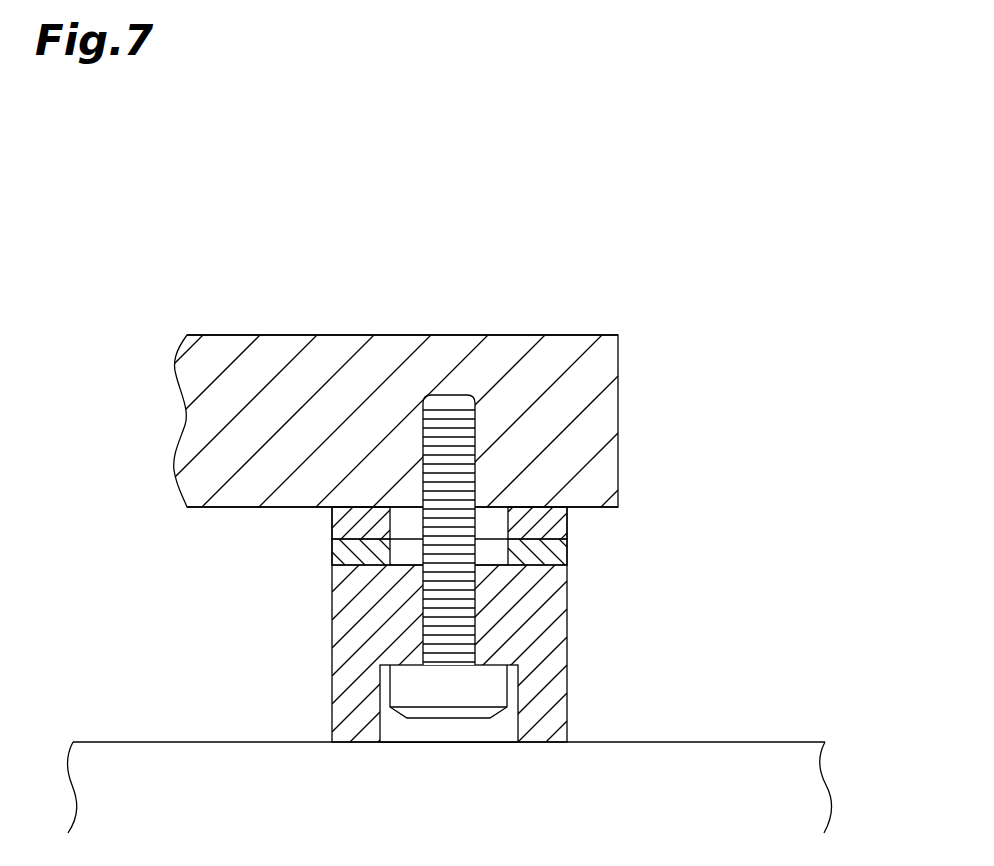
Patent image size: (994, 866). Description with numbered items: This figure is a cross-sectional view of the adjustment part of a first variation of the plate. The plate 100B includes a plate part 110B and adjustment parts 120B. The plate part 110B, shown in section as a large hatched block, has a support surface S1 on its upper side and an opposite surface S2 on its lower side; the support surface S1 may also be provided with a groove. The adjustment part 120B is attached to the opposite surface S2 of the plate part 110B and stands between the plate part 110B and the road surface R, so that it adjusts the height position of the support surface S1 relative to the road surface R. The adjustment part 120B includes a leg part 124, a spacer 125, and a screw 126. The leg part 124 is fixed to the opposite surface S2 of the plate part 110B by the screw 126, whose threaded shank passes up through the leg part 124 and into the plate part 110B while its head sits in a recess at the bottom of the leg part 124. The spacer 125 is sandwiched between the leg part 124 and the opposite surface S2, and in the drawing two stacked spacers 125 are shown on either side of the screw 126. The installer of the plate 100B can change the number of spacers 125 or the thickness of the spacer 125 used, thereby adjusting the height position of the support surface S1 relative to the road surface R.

The plate 100B is at (457, 504).
The plate part 110B is at (304, 336).
The support surface S1 is at (237, 336).
The opposite surface S2 is at (235, 508).
The adjustment part 120B is at (569, 613).
The leg part 124 is at (557, 690).
The spacer 125 is at (567, 520).
The screw 126 is at (450, 698).
The road surface R is at (739, 741).